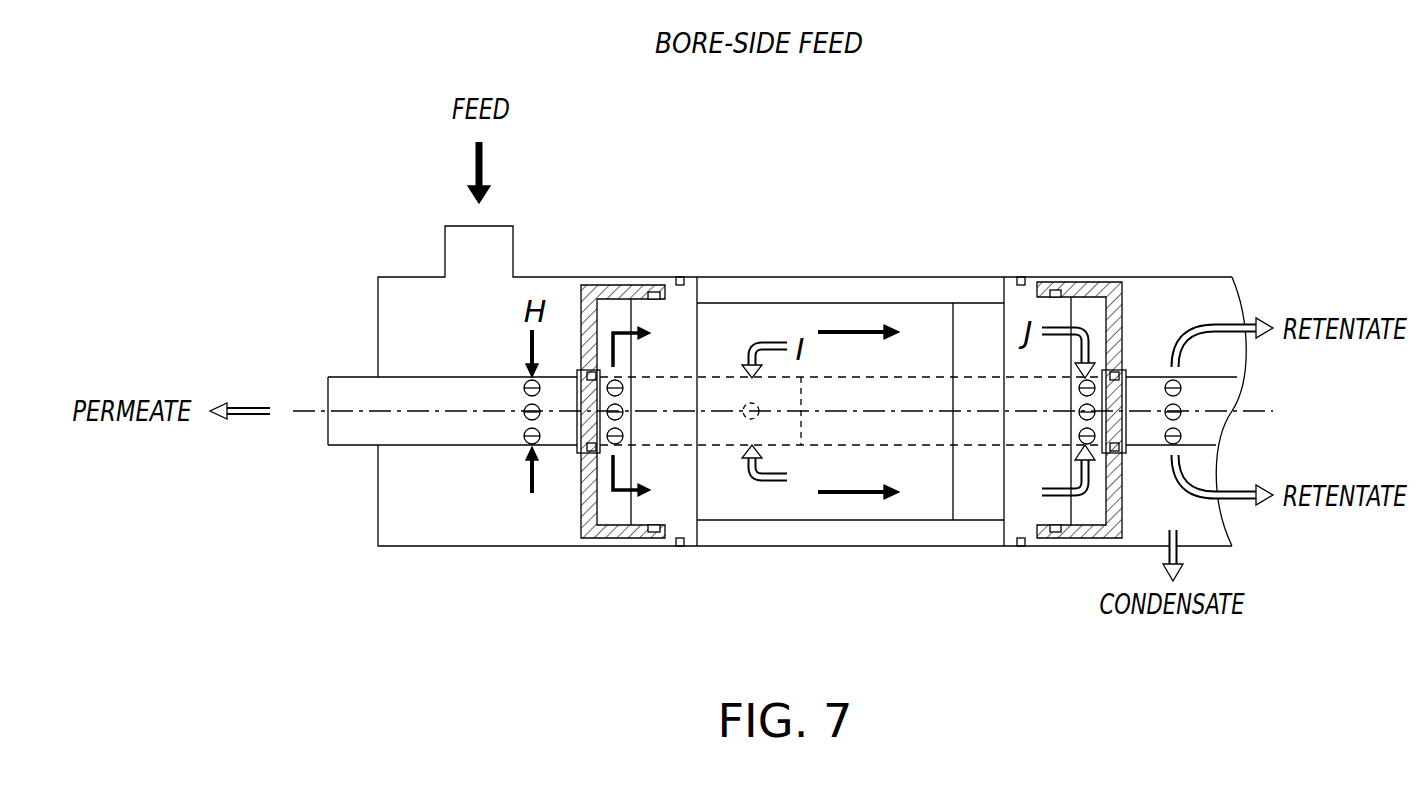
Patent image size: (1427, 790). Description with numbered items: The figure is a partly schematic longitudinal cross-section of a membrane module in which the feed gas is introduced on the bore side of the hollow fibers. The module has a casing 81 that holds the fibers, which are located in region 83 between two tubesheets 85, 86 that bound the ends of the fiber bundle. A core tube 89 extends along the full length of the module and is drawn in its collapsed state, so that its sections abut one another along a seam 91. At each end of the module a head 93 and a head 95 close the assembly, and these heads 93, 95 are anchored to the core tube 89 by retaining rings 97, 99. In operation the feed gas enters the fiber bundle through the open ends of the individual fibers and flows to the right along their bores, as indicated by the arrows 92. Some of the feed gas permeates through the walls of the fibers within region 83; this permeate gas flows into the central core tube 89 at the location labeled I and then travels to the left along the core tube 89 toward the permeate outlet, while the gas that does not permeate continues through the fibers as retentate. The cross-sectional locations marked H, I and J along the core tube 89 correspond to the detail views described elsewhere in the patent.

The casing 81 is at (378, 498).
The region holding fibers 83 is at (728, 336).
The tubesheet 85 is at (695, 277).
The tubesheet 86 is at (1010, 277).
The core tube 89 is at (327, 377).
The seam 91 is at (802, 445).
The arrows 92 is at (863, 332).
The head 93 is at (583, 281).
The head 95 is at (1123, 277).
The retaining ring 97 is at (578, 453).
The retaining ring 99 is at (1133, 373).